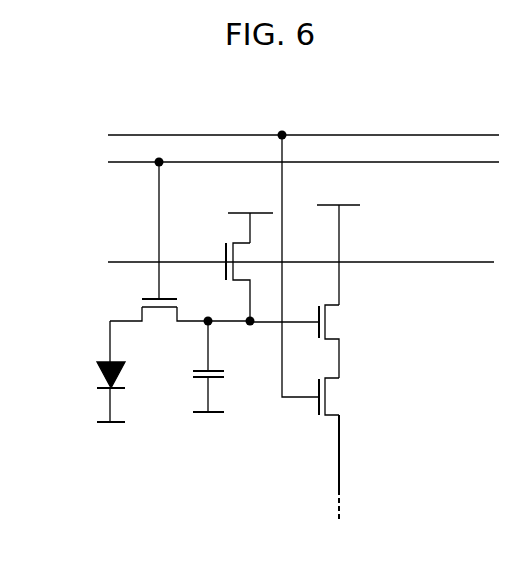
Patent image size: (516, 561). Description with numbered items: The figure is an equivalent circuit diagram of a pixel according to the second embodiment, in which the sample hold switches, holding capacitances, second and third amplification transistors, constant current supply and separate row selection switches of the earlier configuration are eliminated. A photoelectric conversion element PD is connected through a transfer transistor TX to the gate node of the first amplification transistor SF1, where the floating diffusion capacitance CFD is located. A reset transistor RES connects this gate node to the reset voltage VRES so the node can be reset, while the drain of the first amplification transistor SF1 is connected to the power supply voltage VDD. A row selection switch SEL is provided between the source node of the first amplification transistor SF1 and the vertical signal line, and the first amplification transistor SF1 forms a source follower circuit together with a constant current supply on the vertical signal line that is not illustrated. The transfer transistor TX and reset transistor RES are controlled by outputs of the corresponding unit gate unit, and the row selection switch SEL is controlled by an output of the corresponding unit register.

The transfer transistor TX is at (179, 244).
The photoelectric conversion element PD is at (92, 371).
The floating diffusion capacitance CFD is at (226, 366).
The reset voltage VRES is at (250, 217).
The reset transistor RES is at (216, 274).
The power supply voltage VDD is at (338, 244).
The first amplification transistor SF1 is at (316, 341).
The row selection switch SEL is at (310, 288).